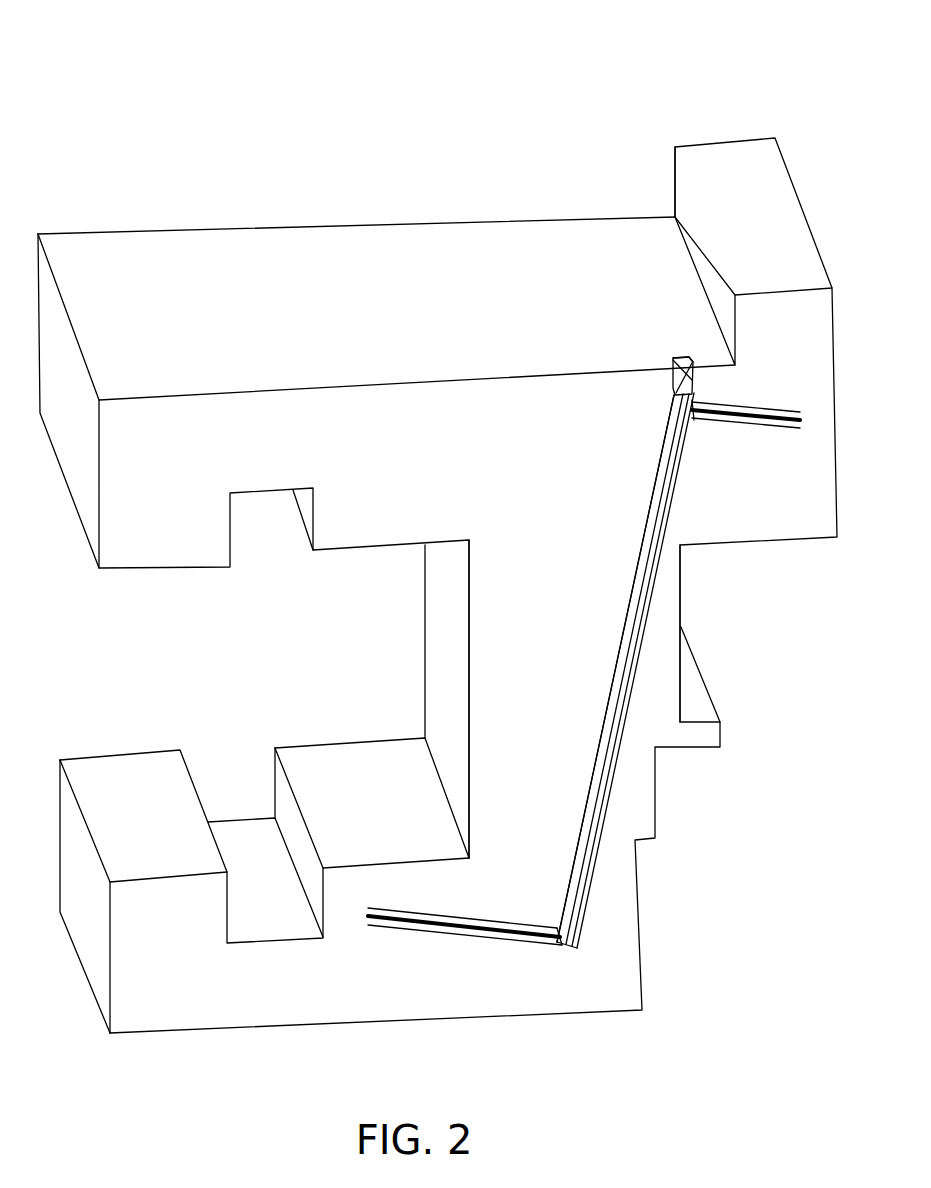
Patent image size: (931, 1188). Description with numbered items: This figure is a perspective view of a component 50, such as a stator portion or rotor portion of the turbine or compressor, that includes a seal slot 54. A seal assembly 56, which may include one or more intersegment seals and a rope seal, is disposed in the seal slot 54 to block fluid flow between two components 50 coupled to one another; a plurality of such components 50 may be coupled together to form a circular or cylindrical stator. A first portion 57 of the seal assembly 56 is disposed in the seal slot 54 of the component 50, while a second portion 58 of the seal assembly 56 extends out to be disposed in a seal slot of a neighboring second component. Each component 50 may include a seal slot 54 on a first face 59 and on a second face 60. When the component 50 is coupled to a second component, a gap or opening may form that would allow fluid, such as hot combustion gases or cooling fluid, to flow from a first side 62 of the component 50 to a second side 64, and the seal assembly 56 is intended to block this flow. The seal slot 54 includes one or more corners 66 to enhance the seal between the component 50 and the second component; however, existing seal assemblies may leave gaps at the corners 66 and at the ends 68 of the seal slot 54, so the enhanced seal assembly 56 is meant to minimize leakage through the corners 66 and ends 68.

The component 50 is at (138, 78).
The seal slot 54 is at (674, 352).
The seal assembly 56 is at (650, 610).
The first portion 57 is at (692, 358).
The second portion 58 is at (690, 458).
The first face 59 is at (506, 467).
The second face 60 is at (318, 220).
The first side 62 is at (231, 660).
The second side 64 is at (826, 680).
The corners 66 is at (708, 388).
The ends 68 is at (803, 428).